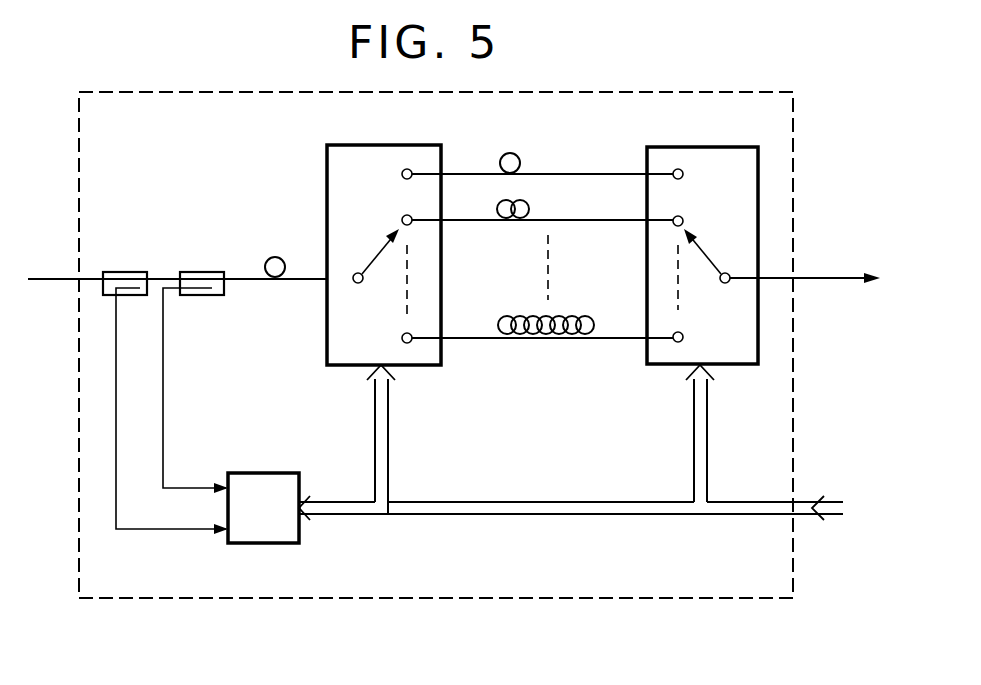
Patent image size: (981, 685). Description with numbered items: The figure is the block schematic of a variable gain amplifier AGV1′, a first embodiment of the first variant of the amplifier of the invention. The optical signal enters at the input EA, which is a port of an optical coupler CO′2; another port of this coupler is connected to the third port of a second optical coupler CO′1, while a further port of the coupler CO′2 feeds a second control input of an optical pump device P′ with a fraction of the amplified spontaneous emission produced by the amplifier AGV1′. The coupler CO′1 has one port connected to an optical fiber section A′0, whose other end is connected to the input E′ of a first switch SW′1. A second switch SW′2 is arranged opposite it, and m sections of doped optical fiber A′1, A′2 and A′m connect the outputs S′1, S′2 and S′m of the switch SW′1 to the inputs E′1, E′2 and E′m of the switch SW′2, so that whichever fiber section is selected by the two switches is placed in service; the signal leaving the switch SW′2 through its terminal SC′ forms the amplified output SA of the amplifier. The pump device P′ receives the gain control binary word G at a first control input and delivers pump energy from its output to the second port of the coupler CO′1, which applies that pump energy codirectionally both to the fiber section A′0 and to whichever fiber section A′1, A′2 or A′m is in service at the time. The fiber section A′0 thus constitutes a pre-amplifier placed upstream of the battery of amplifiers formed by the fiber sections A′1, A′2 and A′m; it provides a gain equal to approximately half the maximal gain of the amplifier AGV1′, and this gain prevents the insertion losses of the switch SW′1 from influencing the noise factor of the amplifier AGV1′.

The variable gain amplifier AGV1′ is at (667, 108).
The input of the variable gain amplifier EA is at (48, 278).
The optical coupler CO′2 is at (128, 272).
The optical coupler CO′1 is at (210, 272).
The optical fiber section A′0 is at (285, 257).
The first switch SW′1 is at (354, 165).
The second switch SW′2 is at (732, 160).
The first switch output S′1 is at (402, 174).
The second switch output S′2 is at (402, 220).
The m-th switch output S′m is at (402, 338).
The input of the first switch E′ is at (356, 284).
The section of doped optical fiber A′1 is at (517, 155).
The section of doped optical fiber A′2 is at (530, 208).
The section of doped optical fiber A′m is at (576, 315).
The first switch input E′1 is at (684, 175).
The second switch input E′2 is at (684, 220).
The m-th switch input E′m is at (684, 337).
The switch common output SC′ is at (722, 284).
The output signal SA is at (848, 277).
The optical pump device P′ is at (255, 495).
The gain control binary word G is at (588, 445).